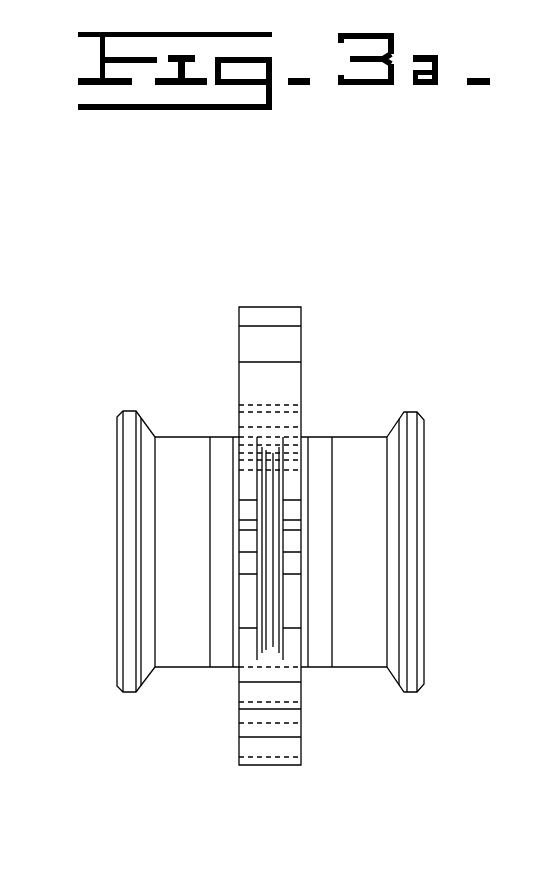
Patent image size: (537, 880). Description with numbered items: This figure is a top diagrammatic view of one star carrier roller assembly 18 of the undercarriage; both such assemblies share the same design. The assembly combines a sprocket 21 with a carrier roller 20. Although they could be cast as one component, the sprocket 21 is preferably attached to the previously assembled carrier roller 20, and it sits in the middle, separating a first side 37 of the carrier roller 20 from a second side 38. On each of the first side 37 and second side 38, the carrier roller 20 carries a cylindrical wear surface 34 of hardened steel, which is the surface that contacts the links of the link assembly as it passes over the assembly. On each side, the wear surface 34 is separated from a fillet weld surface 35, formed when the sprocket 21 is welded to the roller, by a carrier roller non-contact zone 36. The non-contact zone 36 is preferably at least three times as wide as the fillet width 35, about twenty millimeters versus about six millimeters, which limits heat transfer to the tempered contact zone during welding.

The star carrier roller assembly 18 is at (404, 321).
The carrier roller 20 is at (425, 627).
The sprocket 21 is at (306, 680).
The cylindrical wear surface 34 is at (182, 667).
The fillet weld surface 35 is at (303, 437).
The carrier roller non-contact zone 36 is at (324, 437).
The first side 37 is at (121, 413).
The second side 38 is at (425, 442).